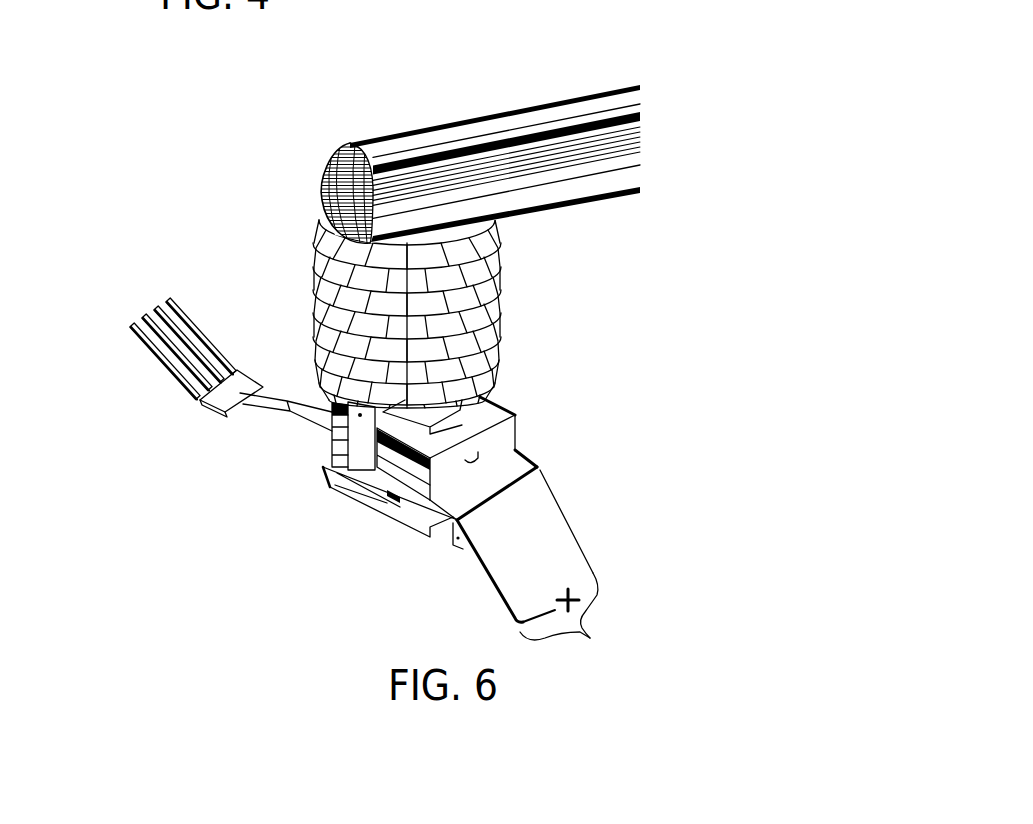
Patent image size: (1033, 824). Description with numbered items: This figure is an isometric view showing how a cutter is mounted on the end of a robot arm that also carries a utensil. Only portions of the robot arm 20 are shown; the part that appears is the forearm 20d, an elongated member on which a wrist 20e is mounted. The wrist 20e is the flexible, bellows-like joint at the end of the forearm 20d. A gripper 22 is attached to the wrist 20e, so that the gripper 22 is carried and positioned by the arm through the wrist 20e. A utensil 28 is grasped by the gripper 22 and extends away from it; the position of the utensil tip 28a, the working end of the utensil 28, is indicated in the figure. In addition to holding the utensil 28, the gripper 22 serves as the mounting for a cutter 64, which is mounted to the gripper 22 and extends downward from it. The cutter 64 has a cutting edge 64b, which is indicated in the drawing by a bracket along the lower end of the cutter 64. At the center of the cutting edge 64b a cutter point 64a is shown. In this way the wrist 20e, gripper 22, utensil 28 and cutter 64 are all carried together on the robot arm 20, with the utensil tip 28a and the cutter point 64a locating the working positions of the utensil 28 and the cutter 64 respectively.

The robot arm 20 is at (477, 121).
The forearm 20d is at (410, 128).
The wrist 20e is at (463, 310).
The gripper 22 is at (400, 458).
The utensil 28 is at (194, 336).
The utensil tip 28a is at (145, 302).
The cutter 64 is at (539, 558).
The cutter point 64a is at (581, 589).
The cutting edge 64b is at (573, 611).